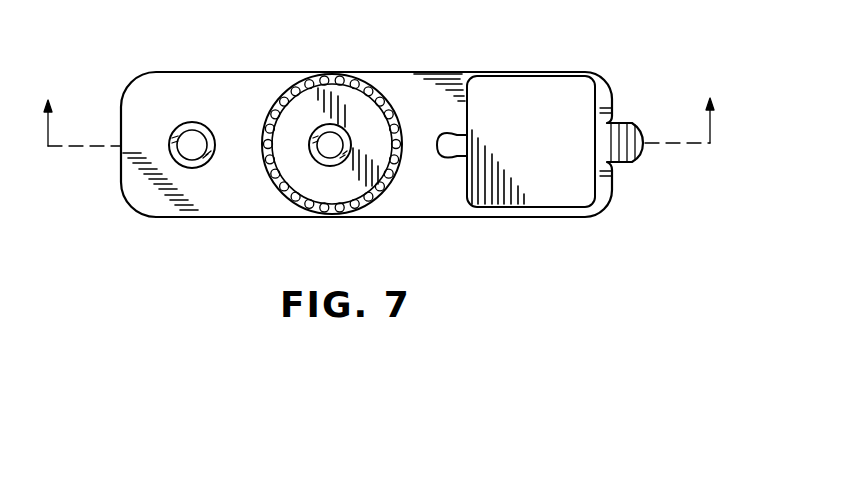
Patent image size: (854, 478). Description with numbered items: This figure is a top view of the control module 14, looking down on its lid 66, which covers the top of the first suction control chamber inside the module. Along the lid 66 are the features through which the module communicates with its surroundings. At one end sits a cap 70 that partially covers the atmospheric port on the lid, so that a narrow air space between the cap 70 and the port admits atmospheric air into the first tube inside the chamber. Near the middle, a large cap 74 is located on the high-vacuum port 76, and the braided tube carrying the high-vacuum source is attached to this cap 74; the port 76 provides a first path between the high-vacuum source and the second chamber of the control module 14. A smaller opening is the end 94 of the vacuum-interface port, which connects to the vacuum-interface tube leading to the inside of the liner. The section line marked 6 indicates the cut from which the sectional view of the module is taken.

The control module 14 is at (542, 221).
The lid 66 is at (170, 218).
The cap 70 is at (525, 103).
The cap 74 is at (348, 80).
The high-vacuum port 76 is at (351, 130).
The end of vacuum-interface port 94 is at (190, 122).
The section line 6- 6 is at (376, 106).